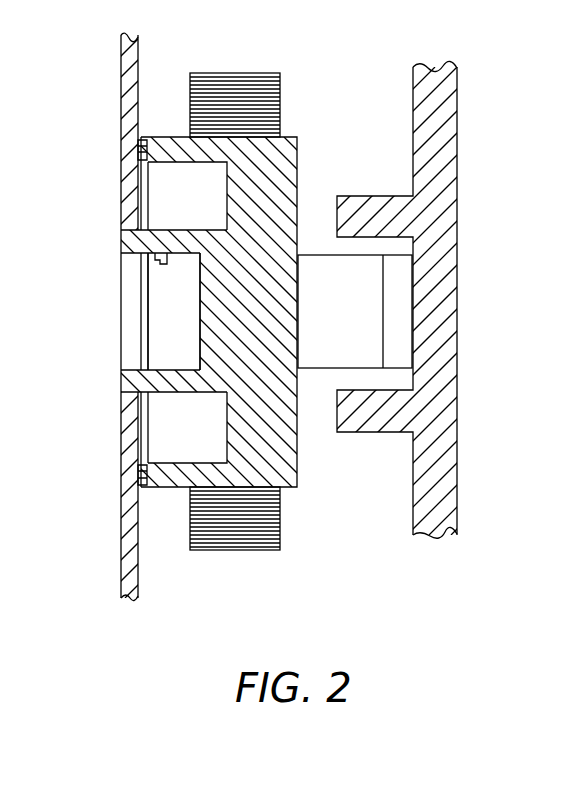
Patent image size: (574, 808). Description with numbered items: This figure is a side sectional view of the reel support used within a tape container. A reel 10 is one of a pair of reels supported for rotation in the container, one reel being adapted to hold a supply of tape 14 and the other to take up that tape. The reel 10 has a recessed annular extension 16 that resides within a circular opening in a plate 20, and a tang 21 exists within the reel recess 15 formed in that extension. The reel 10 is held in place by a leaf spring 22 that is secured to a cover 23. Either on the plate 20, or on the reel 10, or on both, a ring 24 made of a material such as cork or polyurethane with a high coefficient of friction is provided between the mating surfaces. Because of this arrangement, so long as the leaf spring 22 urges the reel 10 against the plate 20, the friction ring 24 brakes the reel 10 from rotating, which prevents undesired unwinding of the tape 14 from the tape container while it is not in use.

The reel 10 is at (262, 387).
The tape 14 is at (232, 73).
The reel recess 15 is at (158, 329).
The annular extension 16 is at (120, 246).
The plate 20 is at (120, 103).
The tang 21 is at (163, 263).
The leaf spring 22 is at (312, 253).
The cover 23 is at (458, 162).
The ring 24 is at (143, 137).